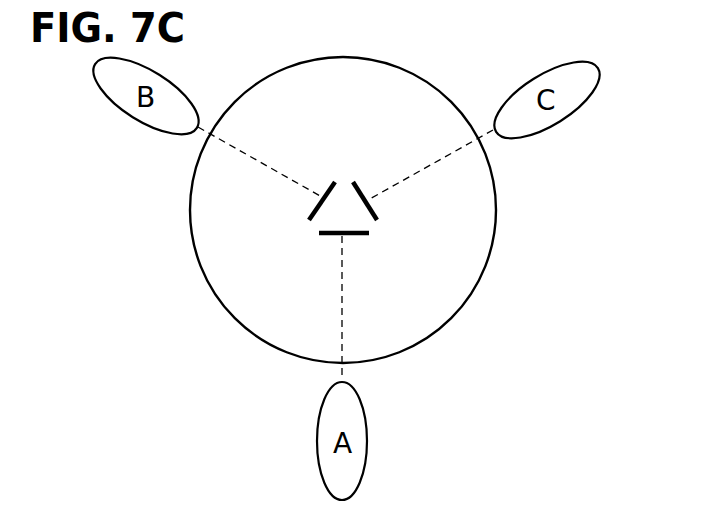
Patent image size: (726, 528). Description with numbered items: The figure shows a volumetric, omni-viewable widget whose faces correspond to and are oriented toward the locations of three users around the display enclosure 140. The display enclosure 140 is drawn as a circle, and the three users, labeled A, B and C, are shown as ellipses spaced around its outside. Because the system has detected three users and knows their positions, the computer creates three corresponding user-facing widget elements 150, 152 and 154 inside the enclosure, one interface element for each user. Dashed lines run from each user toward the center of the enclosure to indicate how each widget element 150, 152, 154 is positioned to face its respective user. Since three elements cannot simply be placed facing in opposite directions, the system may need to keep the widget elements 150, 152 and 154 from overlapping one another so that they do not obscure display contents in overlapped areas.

The display enclosure 140 is at (432, 338).
The widget element 150 is at (360, 237).
The widget element 152 is at (330, 187).
The widget element 154 is at (395, 172).